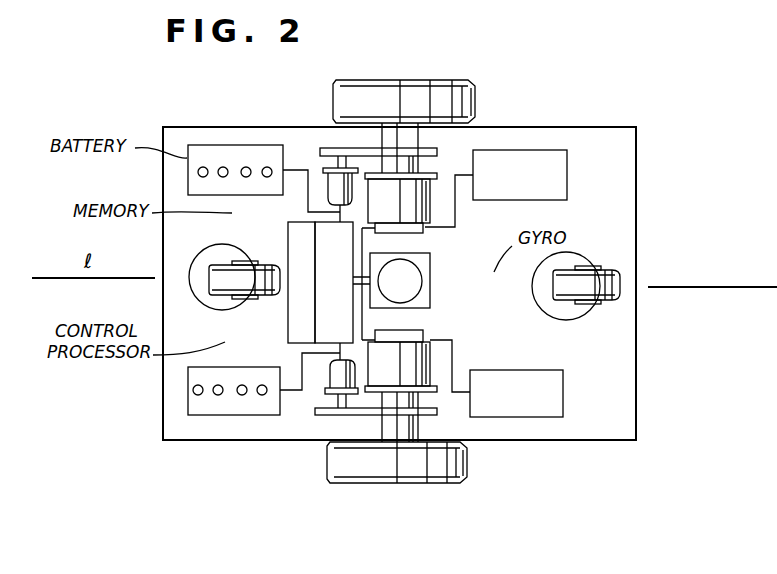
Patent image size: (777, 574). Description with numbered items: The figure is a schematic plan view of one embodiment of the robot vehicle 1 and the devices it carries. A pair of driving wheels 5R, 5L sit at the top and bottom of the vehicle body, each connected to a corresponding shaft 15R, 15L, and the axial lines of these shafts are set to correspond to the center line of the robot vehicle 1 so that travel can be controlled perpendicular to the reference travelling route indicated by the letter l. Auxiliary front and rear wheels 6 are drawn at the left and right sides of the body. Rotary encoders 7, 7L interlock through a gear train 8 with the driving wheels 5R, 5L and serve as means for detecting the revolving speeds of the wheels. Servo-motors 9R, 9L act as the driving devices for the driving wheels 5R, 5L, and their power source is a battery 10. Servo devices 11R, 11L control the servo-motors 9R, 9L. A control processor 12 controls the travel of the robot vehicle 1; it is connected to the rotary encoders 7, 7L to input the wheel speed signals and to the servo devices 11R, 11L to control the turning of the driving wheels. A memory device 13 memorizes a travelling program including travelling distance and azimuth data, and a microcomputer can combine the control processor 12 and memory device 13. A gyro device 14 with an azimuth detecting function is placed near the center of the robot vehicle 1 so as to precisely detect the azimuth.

The robot vehicle 1 is at (641, 119).
The driving wheel 5R is at (447, 100).
The driving wheel 5L is at (435, 462).
The auxiliary front and rear wheels 6 is at (222, 283).
The rotary encoder 7 is at (337, 186).
The rotary encoder 7L is at (335, 372).
The gear train 8 is at (355, 148).
The servo-motor 9R is at (420, 200).
The servo-motor 9L is at (410, 362).
The battery 10 is at (212, 157).
The servo device 11R is at (530, 170).
The servo device 11L is at (522, 400).
The control processor 12 is at (320, 305).
The memory device 13 is at (292, 240).
The gyro device 14 is at (410, 285).
The shaft 15R is at (410, 135).
The shaft 15L is at (392, 428).